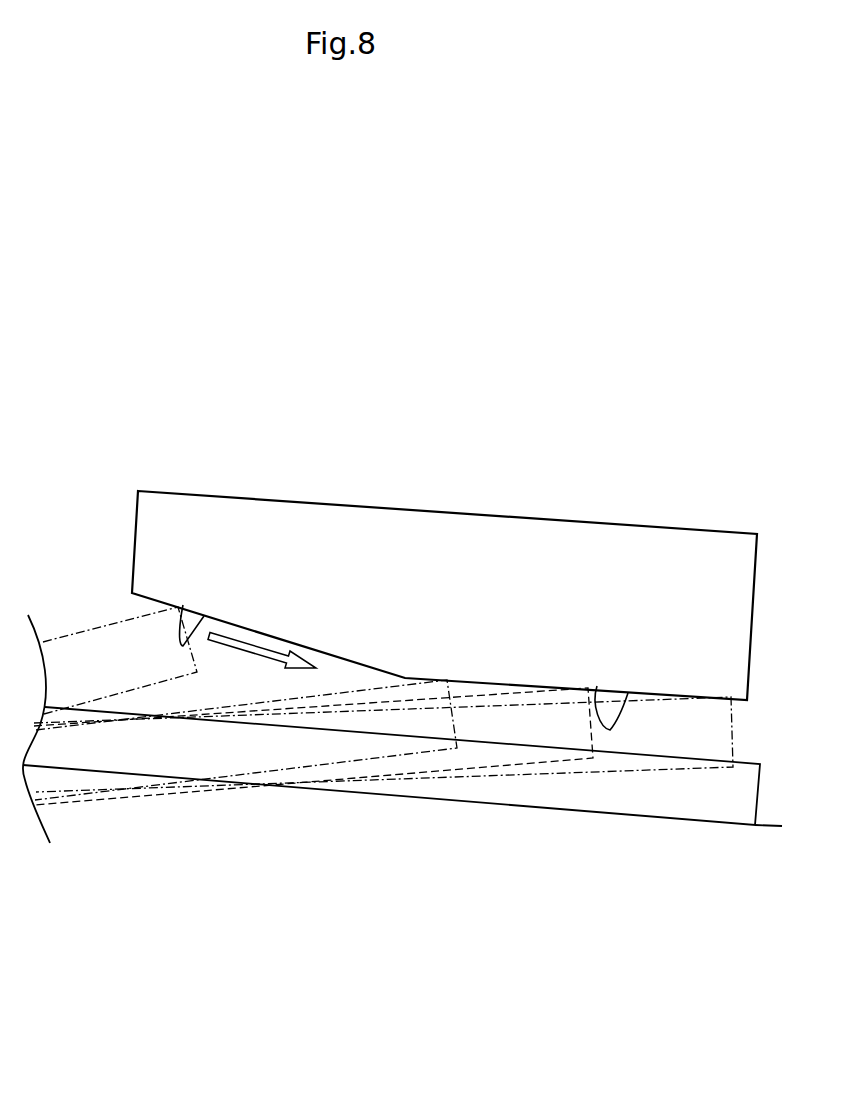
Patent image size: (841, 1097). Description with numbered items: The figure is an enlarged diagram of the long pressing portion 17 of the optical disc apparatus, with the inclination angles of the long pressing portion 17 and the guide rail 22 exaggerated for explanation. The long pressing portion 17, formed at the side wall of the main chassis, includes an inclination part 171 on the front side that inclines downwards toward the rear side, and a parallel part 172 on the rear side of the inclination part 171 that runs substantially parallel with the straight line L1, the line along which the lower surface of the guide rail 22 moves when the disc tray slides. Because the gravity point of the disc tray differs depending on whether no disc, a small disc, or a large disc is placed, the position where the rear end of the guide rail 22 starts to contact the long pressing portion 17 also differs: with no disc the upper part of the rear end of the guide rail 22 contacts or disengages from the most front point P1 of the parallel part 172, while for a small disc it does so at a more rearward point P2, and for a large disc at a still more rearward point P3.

The long pressing portion 17 is at (495, 540).
The inclination part 171 is at (183, 605).
The parallel part 172 is at (597, 686).
The guide rail 22 is at (705, 800).
The most front point of the parallel part P1 is at (446, 668).
The point for small disc P2 is at (577, 675).
The point for large disc P3 is at (716, 683).
The straight line L1 is at (768, 826).